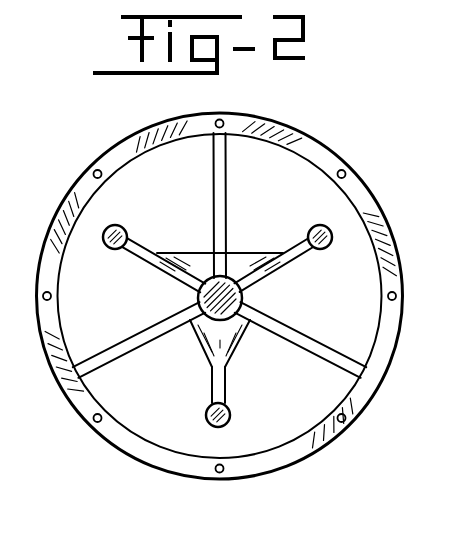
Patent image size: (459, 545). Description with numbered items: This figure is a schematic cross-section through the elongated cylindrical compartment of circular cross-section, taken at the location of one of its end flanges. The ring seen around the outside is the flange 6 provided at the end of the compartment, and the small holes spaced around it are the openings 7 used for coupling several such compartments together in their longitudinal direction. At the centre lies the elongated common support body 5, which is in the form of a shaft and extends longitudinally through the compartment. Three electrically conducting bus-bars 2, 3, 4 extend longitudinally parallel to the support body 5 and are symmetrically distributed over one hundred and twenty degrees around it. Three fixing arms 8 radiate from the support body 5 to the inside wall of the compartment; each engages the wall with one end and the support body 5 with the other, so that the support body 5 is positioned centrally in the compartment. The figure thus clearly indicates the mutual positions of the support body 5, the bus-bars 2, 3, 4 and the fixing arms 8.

The bus-bar 2 is at (311, 230).
The bus-bar 3 is at (116, 249).
The bus-bar 4 is at (230, 414).
The support body 5 is at (201, 288).
The flange 6 is at (297, 142).
The opening 7 is at (344, 176).
The fixing arm 8 is at (213, 188).